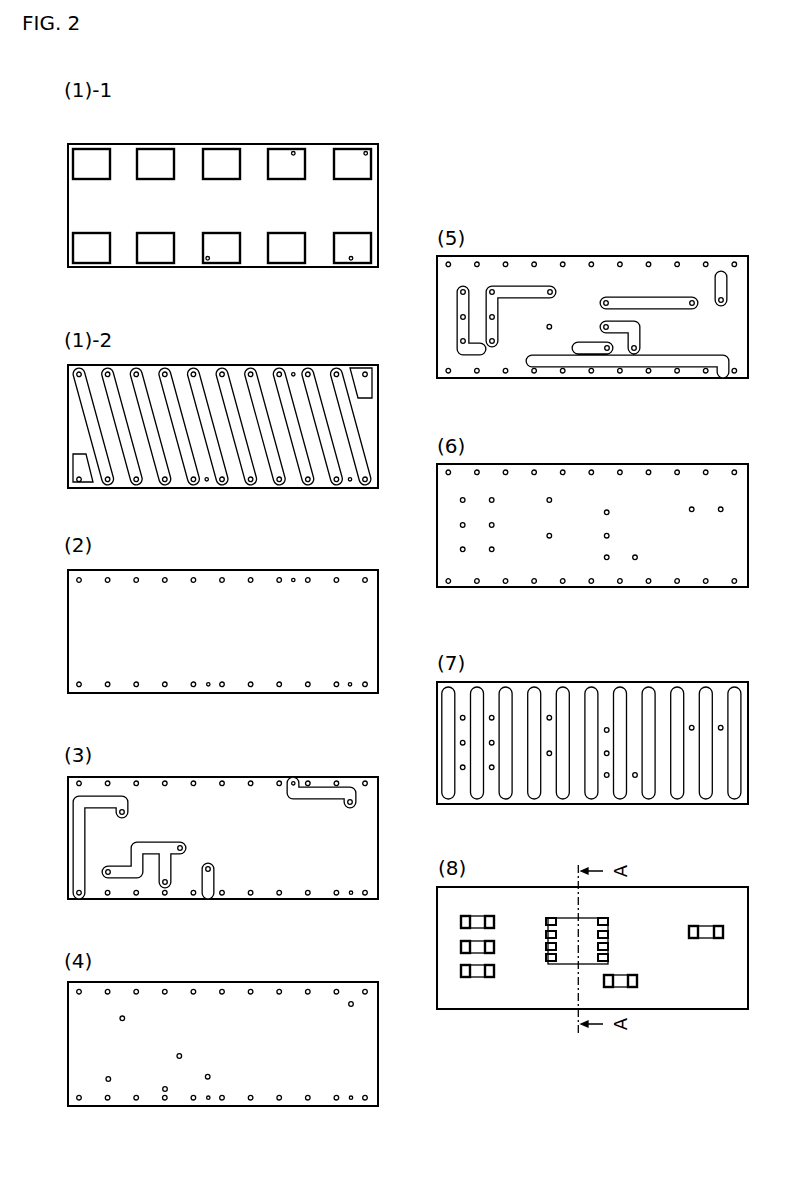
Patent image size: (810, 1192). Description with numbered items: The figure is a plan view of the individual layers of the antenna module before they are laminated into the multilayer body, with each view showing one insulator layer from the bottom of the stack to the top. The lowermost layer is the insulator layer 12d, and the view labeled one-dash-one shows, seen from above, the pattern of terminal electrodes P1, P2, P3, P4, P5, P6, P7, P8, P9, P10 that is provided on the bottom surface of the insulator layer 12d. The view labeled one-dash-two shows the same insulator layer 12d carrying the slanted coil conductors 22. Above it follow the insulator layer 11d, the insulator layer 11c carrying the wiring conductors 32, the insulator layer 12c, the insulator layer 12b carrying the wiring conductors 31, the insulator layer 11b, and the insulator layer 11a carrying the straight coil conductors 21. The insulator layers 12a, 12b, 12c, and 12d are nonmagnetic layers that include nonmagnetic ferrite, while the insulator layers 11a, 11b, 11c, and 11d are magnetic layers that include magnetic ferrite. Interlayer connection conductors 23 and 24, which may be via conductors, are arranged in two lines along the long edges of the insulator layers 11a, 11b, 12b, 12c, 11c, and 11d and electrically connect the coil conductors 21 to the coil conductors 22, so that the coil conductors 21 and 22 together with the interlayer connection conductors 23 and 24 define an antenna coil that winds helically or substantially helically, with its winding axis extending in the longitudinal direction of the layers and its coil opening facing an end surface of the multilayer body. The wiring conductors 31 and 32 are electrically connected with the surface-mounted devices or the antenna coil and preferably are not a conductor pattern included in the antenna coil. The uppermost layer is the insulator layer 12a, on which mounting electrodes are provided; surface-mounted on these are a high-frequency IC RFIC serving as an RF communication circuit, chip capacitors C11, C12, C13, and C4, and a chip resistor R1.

The terminal electrode P1 is at (93, 155).
The terminal electrode P2 is at (158, 155).
The terminal electrode P3 is at (223, 155).
The terminal electrode P4 is at (288, 155).
The terminal electrode P5 is at (353, 155).
The terminal electrode P6 is at (354, 257).
The terminal electrode P7 is at (288, 257).
The terminal electrode P8 is at (222, 257).
The terminal electrode P9 is at (156, 257).
The terminal electrode P10 is at (93, 257).
The insulator layer 12d is at (254, 144).
The insulator layer 12c is at (268, 982).
The insulator layer 12b is at (640, 256).
The insulator layer 12a is at (640, 887).
The insulator layer 11d is at (268, 570).
The insulator layer 11c is at (268, 777).
The insulator layer 11b is at (640, 464).
The insulator layer 11a is at (640, 682).
The coil conductor 22 is at (170, 398).
The coil conductor 21 is at (648, 695).
The interlayer connection conductor 24 is at (308, 375).
The interlayer connection conductor 23 is at (337, 480).
The wiring conductor 32 is at (122, 797).
The wiring conductor 31 is at (468, 298).
The chip capacitor C11 is at (480, 915).
The chip capacitor C12 is at (494, 947).
The chip capacitor C13 is at (480, 977).
The chip capacitor C4 is at (637, 982).
The chip resistor R1 is at (715, 927).
The high-frequency IC RFIC is at (608, 918).